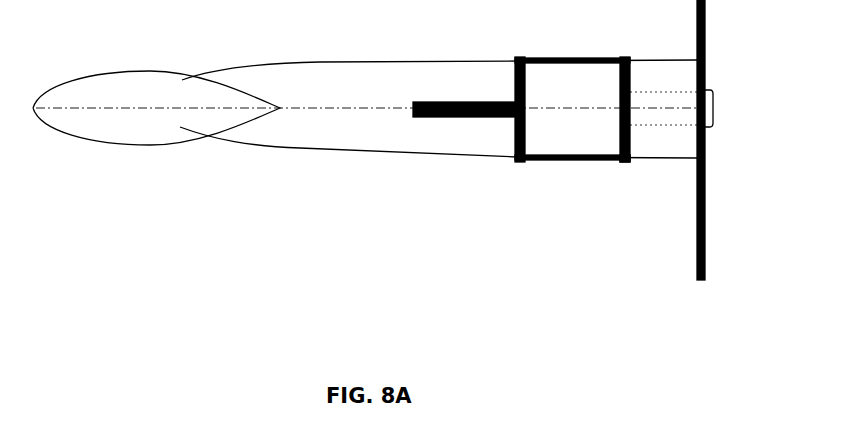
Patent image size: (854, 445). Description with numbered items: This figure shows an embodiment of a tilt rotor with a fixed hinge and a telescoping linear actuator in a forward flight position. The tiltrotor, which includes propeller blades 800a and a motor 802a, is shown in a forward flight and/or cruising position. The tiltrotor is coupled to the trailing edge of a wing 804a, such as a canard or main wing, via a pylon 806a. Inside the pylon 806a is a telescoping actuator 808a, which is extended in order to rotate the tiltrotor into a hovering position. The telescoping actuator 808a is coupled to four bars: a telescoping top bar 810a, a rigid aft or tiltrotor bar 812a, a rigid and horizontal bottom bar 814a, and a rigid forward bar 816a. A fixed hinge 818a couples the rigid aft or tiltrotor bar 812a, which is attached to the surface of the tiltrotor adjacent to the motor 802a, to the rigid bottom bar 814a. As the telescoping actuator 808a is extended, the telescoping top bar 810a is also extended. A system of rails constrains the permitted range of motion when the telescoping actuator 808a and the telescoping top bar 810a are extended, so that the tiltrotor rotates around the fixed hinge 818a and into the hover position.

The propeller blades 800a is at (707, 237).
The motor 802a is at (683, 74).
The wing 804a is at (108, 72).
The pylon 806a is at (318, 62).
The telescoping actuator 808a is at (467, 102).
The telescoping top bar 810a is at (572, 62).
The rigid aft or tiltrotor bar 812a is at (632, 80).
The rigid bottom bar 814a is at (568, 158).
The rigid forward bar 816a is at (513, 138).
The fixed hinge 818a is at (625, 160).